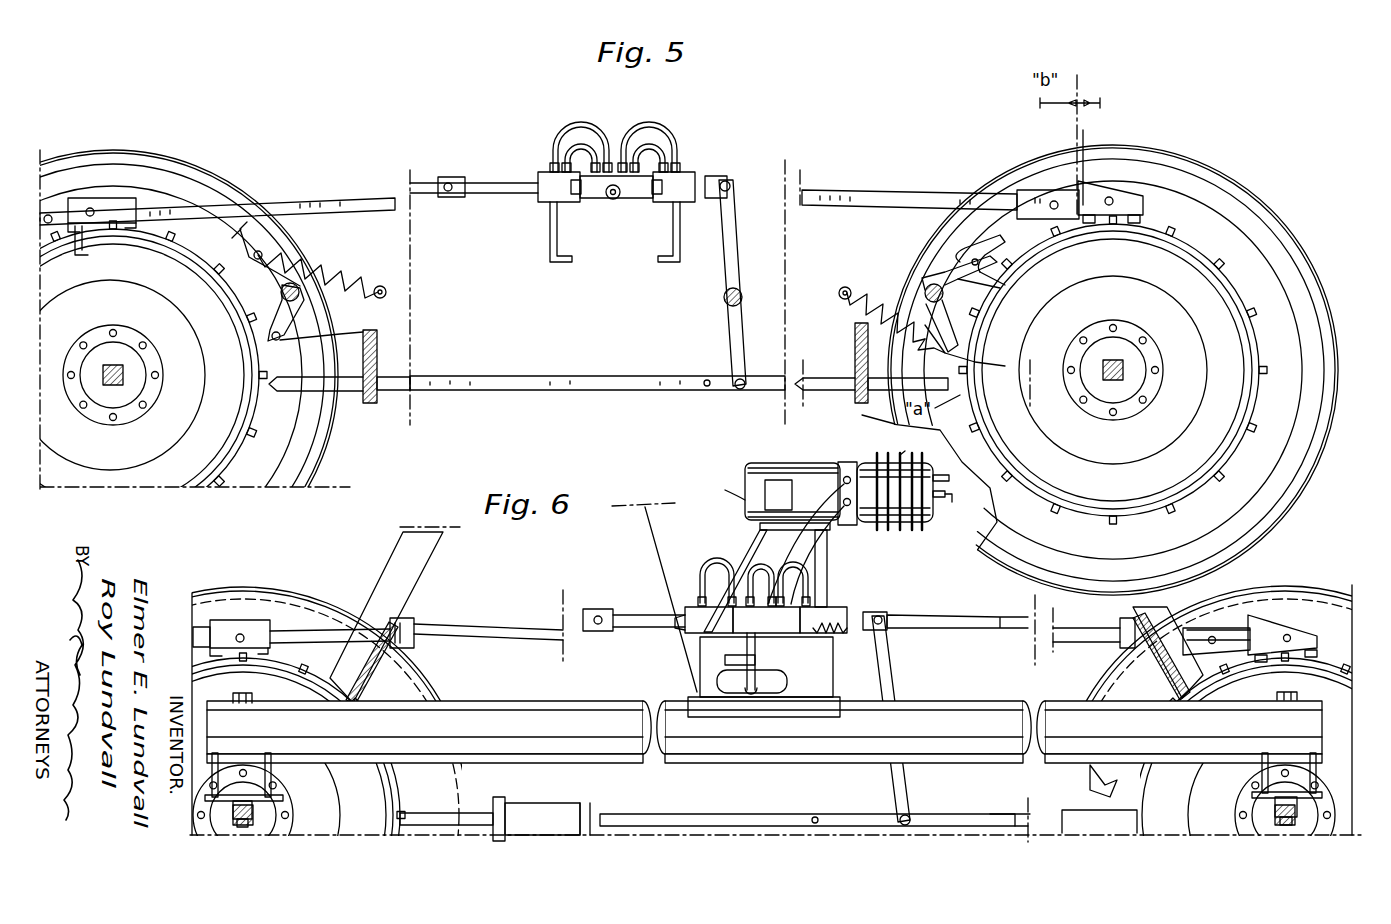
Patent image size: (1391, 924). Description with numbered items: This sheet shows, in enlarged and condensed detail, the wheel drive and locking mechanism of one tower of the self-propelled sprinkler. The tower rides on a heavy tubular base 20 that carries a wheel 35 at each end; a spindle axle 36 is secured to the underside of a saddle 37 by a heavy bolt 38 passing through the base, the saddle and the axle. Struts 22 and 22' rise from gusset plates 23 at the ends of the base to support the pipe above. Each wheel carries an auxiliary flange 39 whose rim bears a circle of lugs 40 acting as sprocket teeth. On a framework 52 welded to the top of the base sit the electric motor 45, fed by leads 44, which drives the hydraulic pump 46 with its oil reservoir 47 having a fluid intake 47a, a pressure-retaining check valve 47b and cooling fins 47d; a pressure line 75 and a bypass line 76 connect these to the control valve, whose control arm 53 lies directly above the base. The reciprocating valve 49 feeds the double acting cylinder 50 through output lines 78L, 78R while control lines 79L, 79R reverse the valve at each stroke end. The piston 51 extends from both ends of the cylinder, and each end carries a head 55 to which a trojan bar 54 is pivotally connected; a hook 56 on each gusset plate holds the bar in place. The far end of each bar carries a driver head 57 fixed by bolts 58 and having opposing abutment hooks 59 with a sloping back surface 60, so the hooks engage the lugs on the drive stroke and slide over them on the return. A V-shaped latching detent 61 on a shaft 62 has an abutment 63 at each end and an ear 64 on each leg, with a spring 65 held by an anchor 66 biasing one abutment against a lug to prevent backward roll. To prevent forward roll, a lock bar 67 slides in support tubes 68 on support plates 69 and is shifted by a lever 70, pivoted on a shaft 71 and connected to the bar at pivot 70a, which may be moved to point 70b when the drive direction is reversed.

In FIG. 6, the tubular base 20 is at (940, 762).
In FIG. 6, the strut 22 is at (386, 617).
In FIG. 6, the strut 22' is at (1135, 649).
In FIG. 6, the gusset plate 23 is at (366, 690).
In FIG. 5, the wheel 35 is at (164, 166).
In FIG. 6, the wheel 35 is at (238, 598).
In FIG. 5, the spindle axle 36 is at (125, 385).
In FIG. 6, the spindle axle 36 is at (252, 812).
In FIG. 6, the saddle 37 is at (283, 796).
In FIG. 6, the bolt 38 is at (247, 695).
In FIG. 5, the auxiliary flange 39 is at (215, 480).
In FIG. 6, the auxiliary flange 39 is at (365, 806).
In FIG. 5, the lugs 40 is at (264, 416).
In FIG. 6, the lugs 40 is at (378, 777).
In FIG. 6, the leads 44 is at (745, 492).
In FIG. 6, the electric motor 45 is at (793, 464).
In FIG. 6, the hydraulic pump 46 is at (848, 462).
In FIG. 6, the oil reservoir 47 is at (882, 533).
In FIG. 6, the fluid intake 47a is at (948, 502).
In FIG. 6, the pressure-retaining check valve 47b is at (949, 479).
In FIG. 6, the fins 47d is at (901, 455).
In FIG. 5, the reciprocating valve 49 is at (621, 196).
In FIG. 6, the reciprocating valve 49 is at (800, 611).
In FIG. 5, the double acting cylinder 50 is at (538, 196).
In FIG. 6, the double acting cylinder 50 is at (695, 610).
In FIG. 5, the piston 51 is at (510, 186).
In FIG. 6, the piston 51 is at (640, 628).
In FIG. 5, the framework 52 is at (550, 252).
In FIG. 6, the framework 52 is at (763, 540).
In FIG. 6, the control arm 53 is at (833, 665).
In FIG. 5, the trojan bar 54 is at (283, 205).
In FIG. 6, the trojan bar 54 is at (495, 627).
In FIG. 6, the head 55 is at (598, 610).
In FIG. 6, the hook 56 is at (401, 618).
In FIG. 5, the driver head 57 is at (124, 205).
In FIG. 6, the driver head 57 is at (249, 624).
In FIG. 5, the bolts 58 is at (93, 209).
In FIG. 6, the bolts 58 is at (245, 635).
In FIG. 5, the abutment hooks 59 is at (84, 253).
In FIG. 5, the sloping back surface 60 is at (1136, 190).
In FIG. 6, the sloping back surface 60 is at (1302, 632).
In FIG. 5, the latching detent 61 is at (291, 321).
In FIG. 5, the shaft 62 is at (300, 297).
In FIG. 5, the abutment 63 is at (244, 232).
In FIG. 5, the ear 64 is at (968, 258).
In FIG. 5, the spring 65 is at (330, 280).
In FIG. 5, the anchor 66 is at (388, 292).
In FIG. 5, the lock bar 67 is at (601, 380).
In FIG. 5, the support tubes 68 is at (372, 406).
In FIG. 6, the support tubes 68 is at (530, 804).
In FIG. 5, the support plates 69 is at (378, 356).
In FIG. 5, the lever 70 is at (739, 262).
In FIG. 6, the lever 70 is at (888, 682).
In FIG. 5, the pivot 70a is at (763, 412).
In FIG. 6, the pivot 70a is at (909, 823).
In FIG. 5, the point 70b is at (707, 388).
In FIG. 6, the point 70b is at (815, 824).
In FIG. 5, the shaft 71 is at (744, 298).
In FIG. 6, the pressure line 75 is at (828, 553).
In FIG. 6, the bypass line 76 is at (830, 498).
In FIG. 5, the output line 78L is at (611, 142).
In FIG. 6, the output line 78L is at (712, 562).
In FIG. 5, the output line 78R is at (649, 136).
In FIG. 6, the output line 78R is at (810, 576).
In FIG. 5, the control line 79L is at (562, 152).
In FIG. 6, the control line 79L is at (712, 576).
In FIG. 5, the control line 79R is at (674, 152).